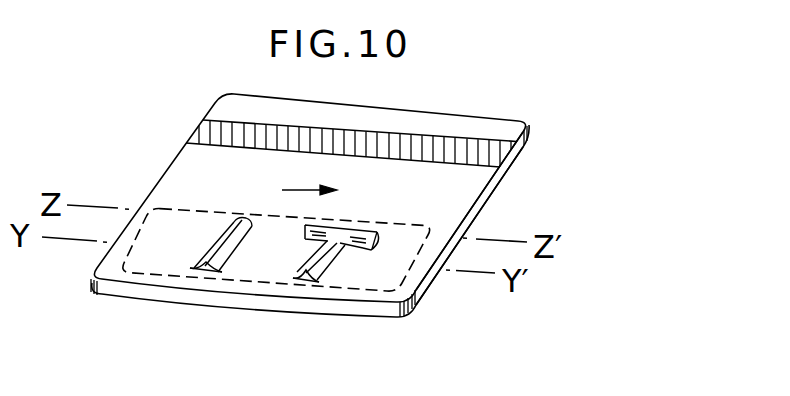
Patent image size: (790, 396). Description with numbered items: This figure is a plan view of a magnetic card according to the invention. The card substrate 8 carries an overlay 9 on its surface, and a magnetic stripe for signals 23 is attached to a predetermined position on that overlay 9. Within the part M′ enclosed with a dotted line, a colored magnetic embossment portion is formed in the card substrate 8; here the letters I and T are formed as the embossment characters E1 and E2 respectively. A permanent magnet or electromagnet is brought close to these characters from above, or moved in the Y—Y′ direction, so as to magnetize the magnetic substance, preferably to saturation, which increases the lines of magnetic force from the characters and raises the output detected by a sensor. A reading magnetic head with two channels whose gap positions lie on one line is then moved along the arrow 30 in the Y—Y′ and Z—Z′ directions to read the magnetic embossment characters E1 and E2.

The overlay 9 is at (507, 122).
The card substrate 8 is at (502, 186).
The magnetic stripe for signals 23 is at (450, 147).
The part enclosed with a dotted line M' is at (278, 230).
The arrow 30 is at (287, 186).
The magnetic embossment character E1 is at (210, 262).
The magnetic embossment character E2 is at (302, 262).